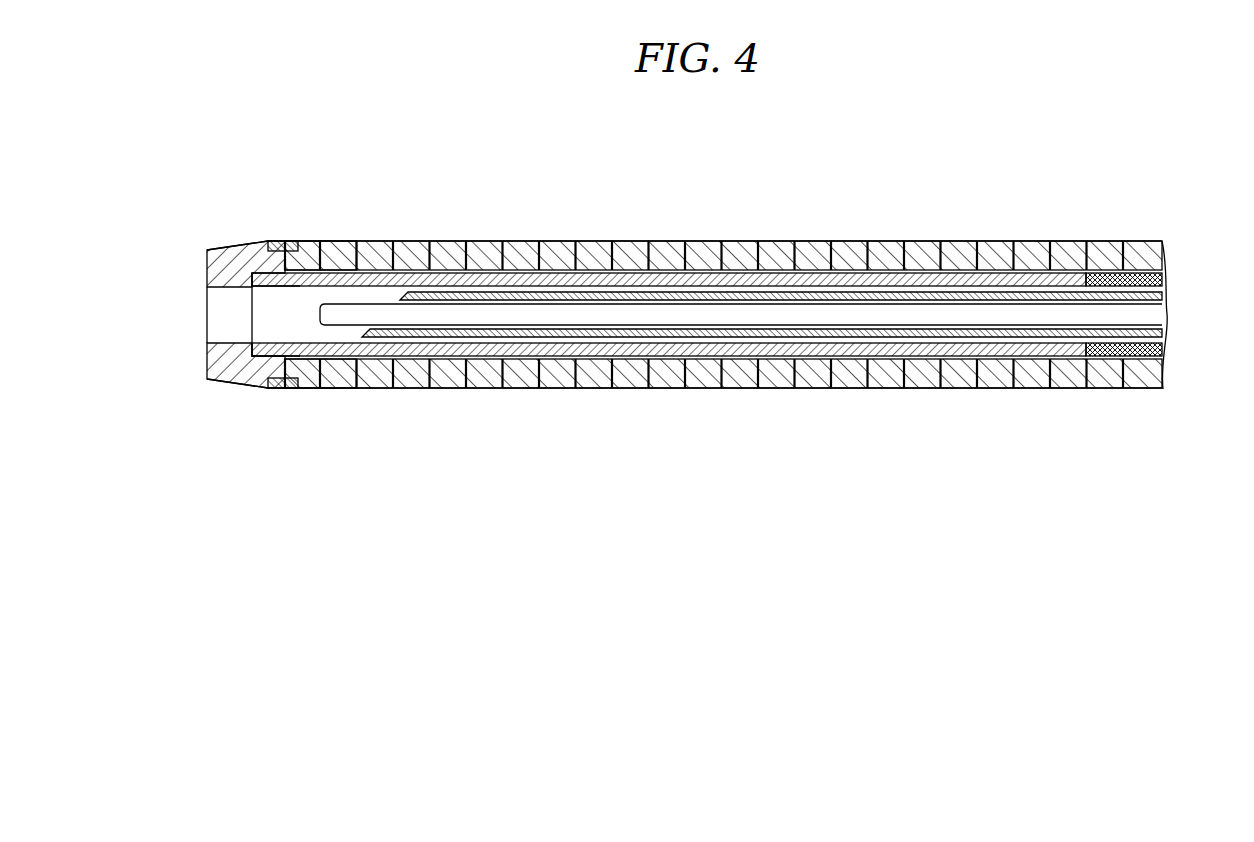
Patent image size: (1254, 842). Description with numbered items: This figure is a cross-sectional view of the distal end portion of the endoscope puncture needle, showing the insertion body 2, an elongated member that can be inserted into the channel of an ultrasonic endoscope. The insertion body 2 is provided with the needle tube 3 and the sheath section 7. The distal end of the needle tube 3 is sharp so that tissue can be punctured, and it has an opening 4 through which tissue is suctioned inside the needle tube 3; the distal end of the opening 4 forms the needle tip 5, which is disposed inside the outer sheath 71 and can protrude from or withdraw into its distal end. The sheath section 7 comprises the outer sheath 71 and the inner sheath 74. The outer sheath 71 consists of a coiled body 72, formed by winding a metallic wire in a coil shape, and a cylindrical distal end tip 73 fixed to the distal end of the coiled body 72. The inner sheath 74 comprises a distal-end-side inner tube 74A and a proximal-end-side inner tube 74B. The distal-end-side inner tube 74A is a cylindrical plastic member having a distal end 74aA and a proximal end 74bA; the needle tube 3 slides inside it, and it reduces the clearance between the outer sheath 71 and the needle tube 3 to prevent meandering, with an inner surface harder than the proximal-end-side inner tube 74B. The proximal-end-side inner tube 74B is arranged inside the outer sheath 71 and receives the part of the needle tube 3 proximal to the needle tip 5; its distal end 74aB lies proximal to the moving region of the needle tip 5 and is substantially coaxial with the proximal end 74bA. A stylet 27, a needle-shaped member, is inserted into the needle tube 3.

The insertion body 2 is at (562, 563).
The needle tube 3 is at (545, 337).
The opening 4 is at (400, 300).
The needle tip 5 is at (368, 336).
The sheath section 7 is at (392, 518).
The stylet 27 is at (990, 313).
The outer sheath 71 is at (298, 478).
The coiled body 72 is at (340, 383).
The distal end tip 73 is at (236, 378).
The inner sheath 74 is at (412, 358).
The distal-end-side inner tube 74A is at (695, 219).
The proximal-end-side inner tube 74B is at (707, 407).
The distal end of distal-end-side inner tube 74aA is at (252, 278).
The distal end of proximal-end-side inner tube 74aB is at (1086, 341).
The proximal end of distal-end-side inner tube 74bA is at (1086, 288).